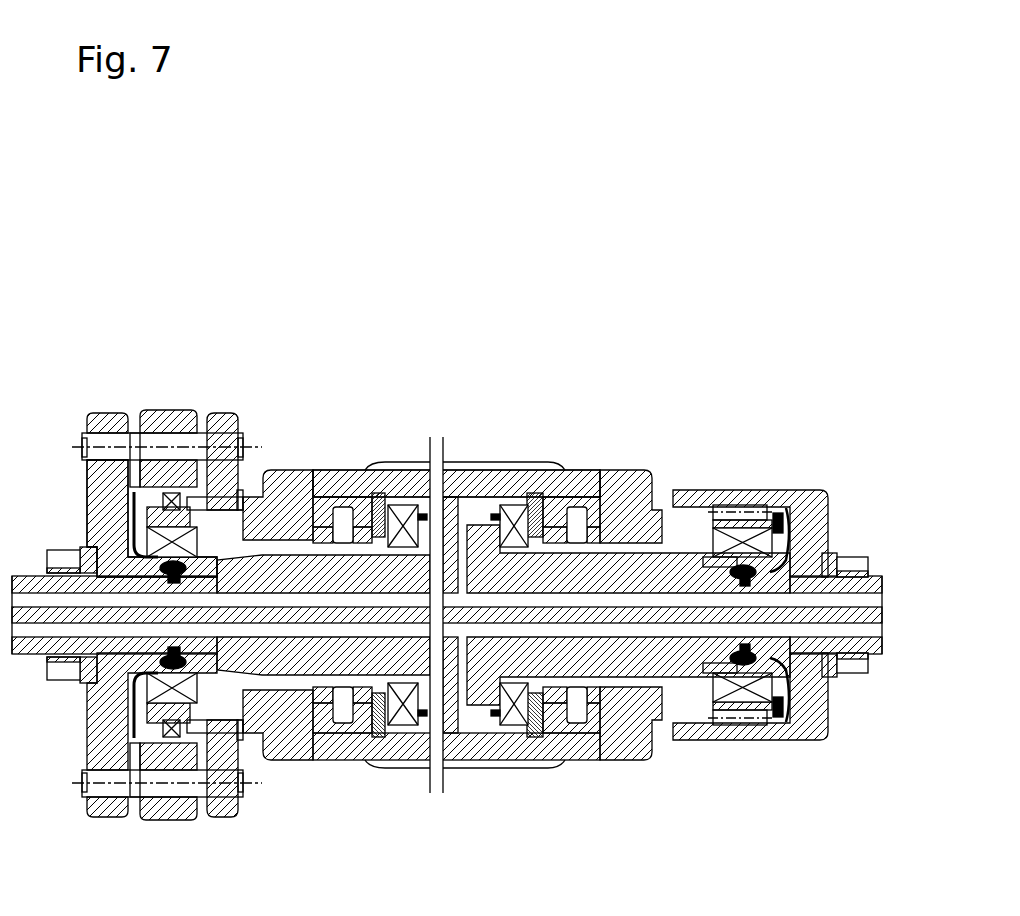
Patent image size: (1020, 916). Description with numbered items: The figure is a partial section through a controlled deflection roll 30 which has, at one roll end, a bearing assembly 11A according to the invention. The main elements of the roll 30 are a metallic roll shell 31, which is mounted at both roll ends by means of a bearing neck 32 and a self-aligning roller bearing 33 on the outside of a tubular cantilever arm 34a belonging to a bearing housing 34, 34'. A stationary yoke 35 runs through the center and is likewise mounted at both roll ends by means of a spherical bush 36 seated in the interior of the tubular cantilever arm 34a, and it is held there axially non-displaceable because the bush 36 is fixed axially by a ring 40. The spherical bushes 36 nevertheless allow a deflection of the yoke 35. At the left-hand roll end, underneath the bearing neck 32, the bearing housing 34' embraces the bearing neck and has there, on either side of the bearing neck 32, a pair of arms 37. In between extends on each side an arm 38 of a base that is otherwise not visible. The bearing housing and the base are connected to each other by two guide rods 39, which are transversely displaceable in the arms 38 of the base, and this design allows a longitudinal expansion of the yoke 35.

The bearing assembly 11A is at (90, 410).
The controlled deflection roll 30 is at (603, 779).
The metallic roll shell 31 is at (340, 482).
The bearing neck 32 is at (282, 480).
The self-aligning roller bearing 33 is at (192, 538).
The bearing housing 34 is at (779, 533).
The tubular cantilever arm 34a is at (155, 477).
The bearing housing 34' is at (124, 711).
The stationary yoke 35 is at (25, 577).
The spherical bush 36 is at (158, 566).
The arm 37 is at (230, 425).
The arm of base 38 is at (193, 413).
The guide rod 39 is at (240, 447).
The ring 40 is at (760, 520).